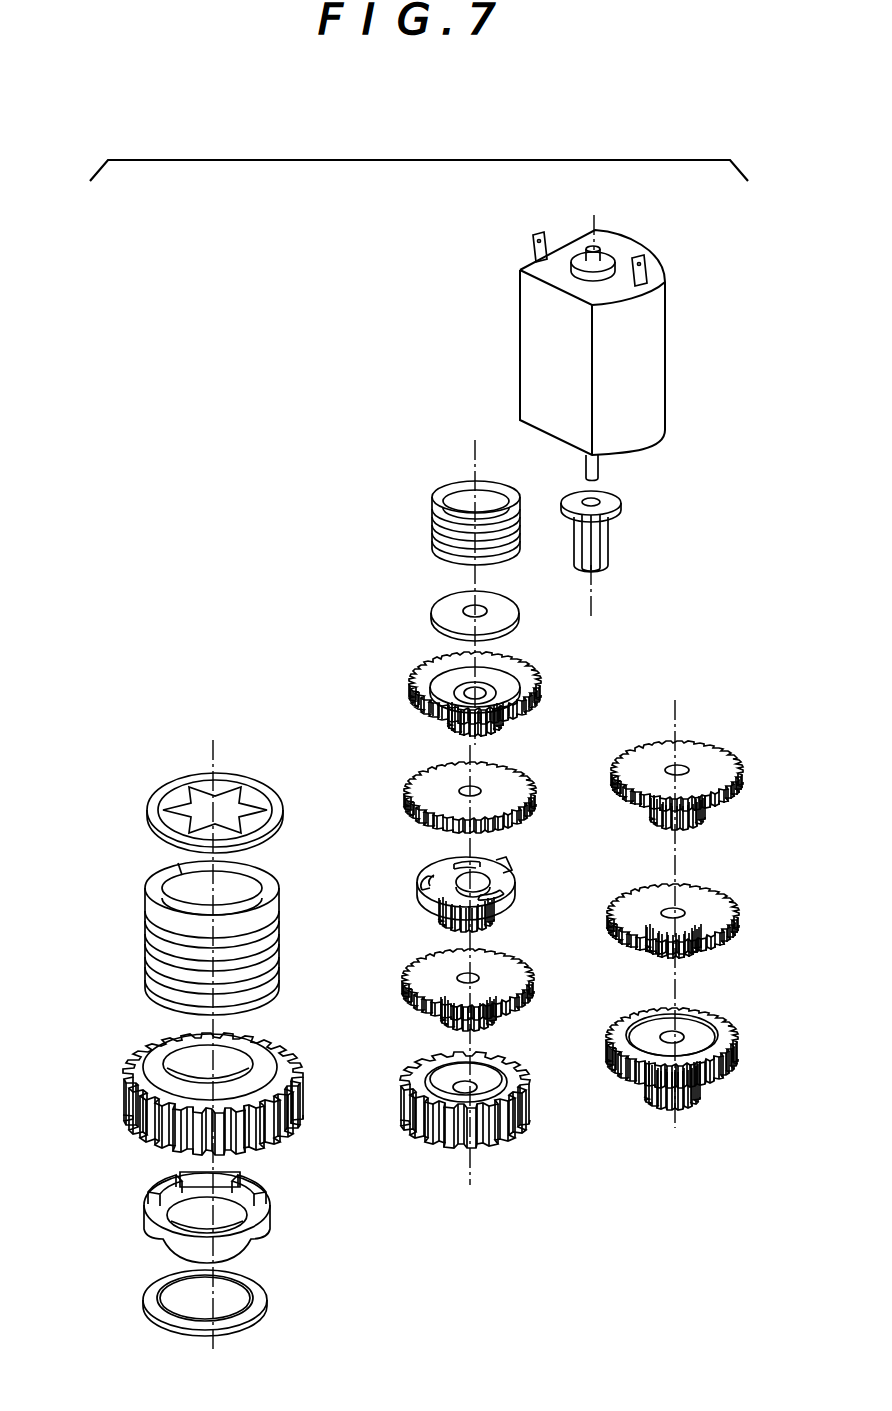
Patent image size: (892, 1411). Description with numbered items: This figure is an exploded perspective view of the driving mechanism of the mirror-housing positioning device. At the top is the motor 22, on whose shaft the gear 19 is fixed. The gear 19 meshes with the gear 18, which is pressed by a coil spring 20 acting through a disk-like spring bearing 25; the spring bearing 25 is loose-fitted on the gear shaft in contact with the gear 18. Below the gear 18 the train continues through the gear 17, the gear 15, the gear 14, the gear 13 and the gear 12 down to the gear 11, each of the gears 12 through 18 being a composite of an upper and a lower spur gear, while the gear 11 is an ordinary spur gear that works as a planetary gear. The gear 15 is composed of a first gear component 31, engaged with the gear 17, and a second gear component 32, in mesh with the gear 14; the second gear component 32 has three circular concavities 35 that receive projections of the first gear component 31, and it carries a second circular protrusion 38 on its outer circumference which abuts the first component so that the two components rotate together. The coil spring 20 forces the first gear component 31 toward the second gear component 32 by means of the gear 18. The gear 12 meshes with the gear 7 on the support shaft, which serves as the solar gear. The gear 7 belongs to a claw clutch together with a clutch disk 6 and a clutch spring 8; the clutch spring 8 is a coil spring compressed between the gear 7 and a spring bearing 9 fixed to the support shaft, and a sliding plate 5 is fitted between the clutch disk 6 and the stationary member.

The sliding plate 5 is at (148, 1302).
The clutch disk 6 is at (152, 1188).
The gear 7 is at (130, 1055).
The clutch spring 8 is at (148, 925).
The spring bearing 9 is at (148, 808).
The gear 11 is at (520, 1130).
The gear 12 is at (737, 1050).
The gear 13 is at (537, 982).
The gear 14 is at (737, 934).
The gear 15 is at (395, 797).
The gear 17 is at (735, 752).
The gear 18 is at (412, 688).
The gear 19 is at (620, 502).
The coil spring 20 is at (433, 532).
The motor 22 is at (667, 347).
The spring bearing 25 is at (432, 615).
The first gear component 31 is at (528, 773).
The second gear component 32 is at (470, 886).
The circular concavities 35 is at (548, 842).
The second circular protrusion 38 is at (417, 929).